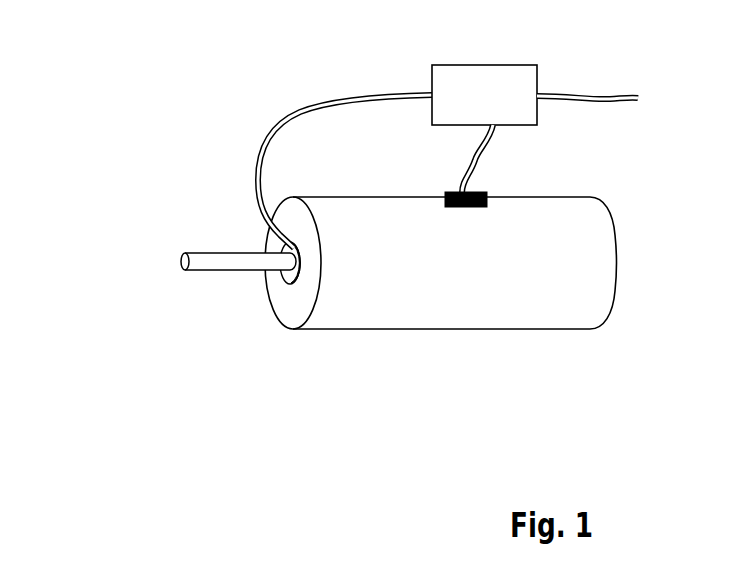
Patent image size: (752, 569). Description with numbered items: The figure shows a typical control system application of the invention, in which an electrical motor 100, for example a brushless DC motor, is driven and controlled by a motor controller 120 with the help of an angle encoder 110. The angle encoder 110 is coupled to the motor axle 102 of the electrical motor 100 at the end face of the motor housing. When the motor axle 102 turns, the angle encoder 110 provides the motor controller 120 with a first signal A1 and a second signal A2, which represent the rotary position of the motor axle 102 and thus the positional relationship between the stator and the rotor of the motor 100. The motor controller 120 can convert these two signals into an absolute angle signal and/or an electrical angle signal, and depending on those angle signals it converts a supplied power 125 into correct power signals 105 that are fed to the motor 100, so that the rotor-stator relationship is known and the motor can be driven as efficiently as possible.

The electrical motor 100 is at (617, 267).
The motor axle 102 is at (230, 270).
The power signals 105 is at (488, 153).
The angle encoder 110 is at (287, 278).
The motor controller 120 is at (537, 73).
The supplied power 125 is at (605, 103).